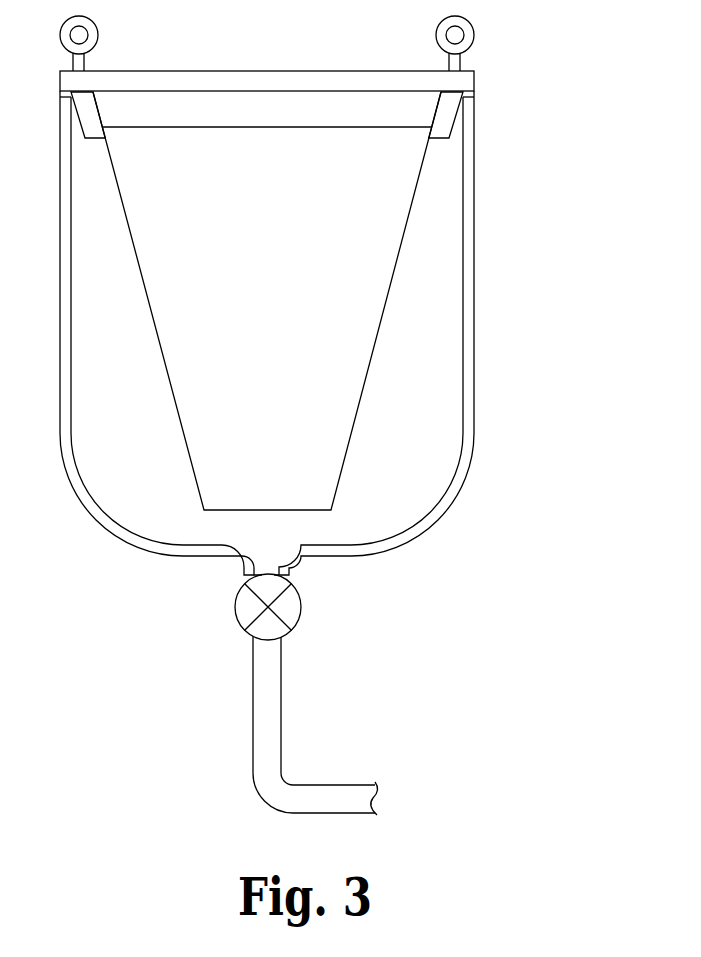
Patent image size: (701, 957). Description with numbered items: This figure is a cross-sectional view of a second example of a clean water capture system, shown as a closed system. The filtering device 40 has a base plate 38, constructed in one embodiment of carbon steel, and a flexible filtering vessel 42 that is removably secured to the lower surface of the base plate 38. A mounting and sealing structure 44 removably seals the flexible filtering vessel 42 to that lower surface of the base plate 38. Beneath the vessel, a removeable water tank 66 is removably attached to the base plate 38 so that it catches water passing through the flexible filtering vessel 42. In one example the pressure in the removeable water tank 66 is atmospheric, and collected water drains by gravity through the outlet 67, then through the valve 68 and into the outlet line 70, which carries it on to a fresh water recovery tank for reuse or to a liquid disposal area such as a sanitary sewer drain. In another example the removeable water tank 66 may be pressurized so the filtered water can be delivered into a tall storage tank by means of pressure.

The base plate 38 is at (458, 80).
The filtering device 40 is at (524, 244).
The flexible filtering vessel 42 is at (382, 197).
The mounting and sealing structure 44 is at (443, 118).
The removeable water tank 66 is at (468, 408).
The outlet 67 is at (265, 553).
The valve 68 is at (302, 607).
The outlet line 70 is at (268, 723).